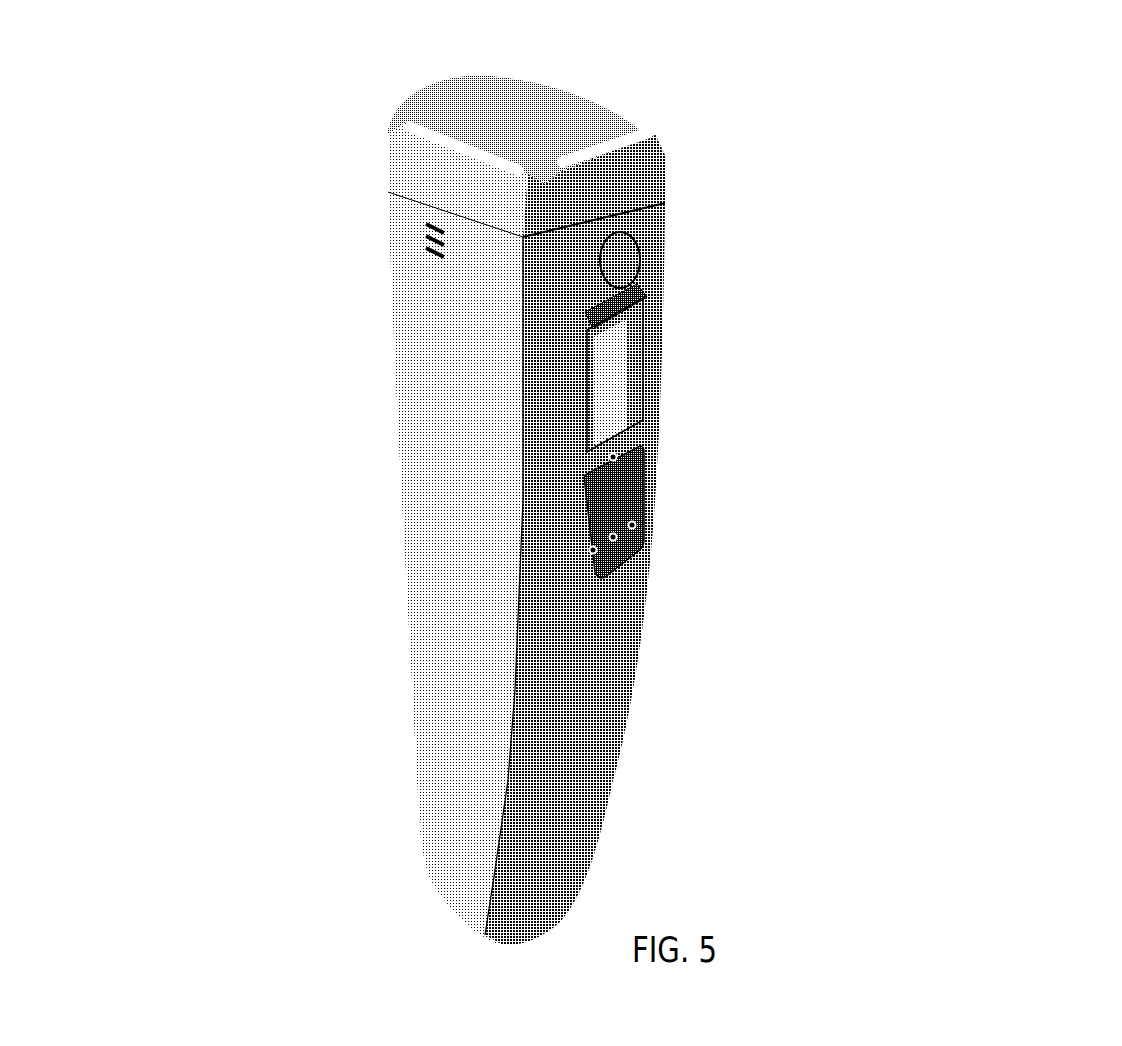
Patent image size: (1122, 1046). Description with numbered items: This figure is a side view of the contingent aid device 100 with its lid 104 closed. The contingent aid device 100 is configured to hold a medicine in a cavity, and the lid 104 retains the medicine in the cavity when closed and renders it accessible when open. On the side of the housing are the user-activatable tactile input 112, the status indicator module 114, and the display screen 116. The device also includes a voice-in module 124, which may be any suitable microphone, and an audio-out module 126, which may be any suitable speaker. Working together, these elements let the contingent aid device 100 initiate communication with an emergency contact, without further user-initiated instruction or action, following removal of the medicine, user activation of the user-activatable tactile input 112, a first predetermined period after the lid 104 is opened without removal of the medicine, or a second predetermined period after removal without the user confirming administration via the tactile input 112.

The contingent aid device 100 is at (740, 492).
The lid 104 is at (594, 156).
The user-activatable tactile input 112 is at (536, 405).
The status indicator module 114 is at (695, 546).
The display screen 116 is at (693, 392).
The voice-in module 124 is at (467, 893).
The audio-out module 126 is at (357, 274).